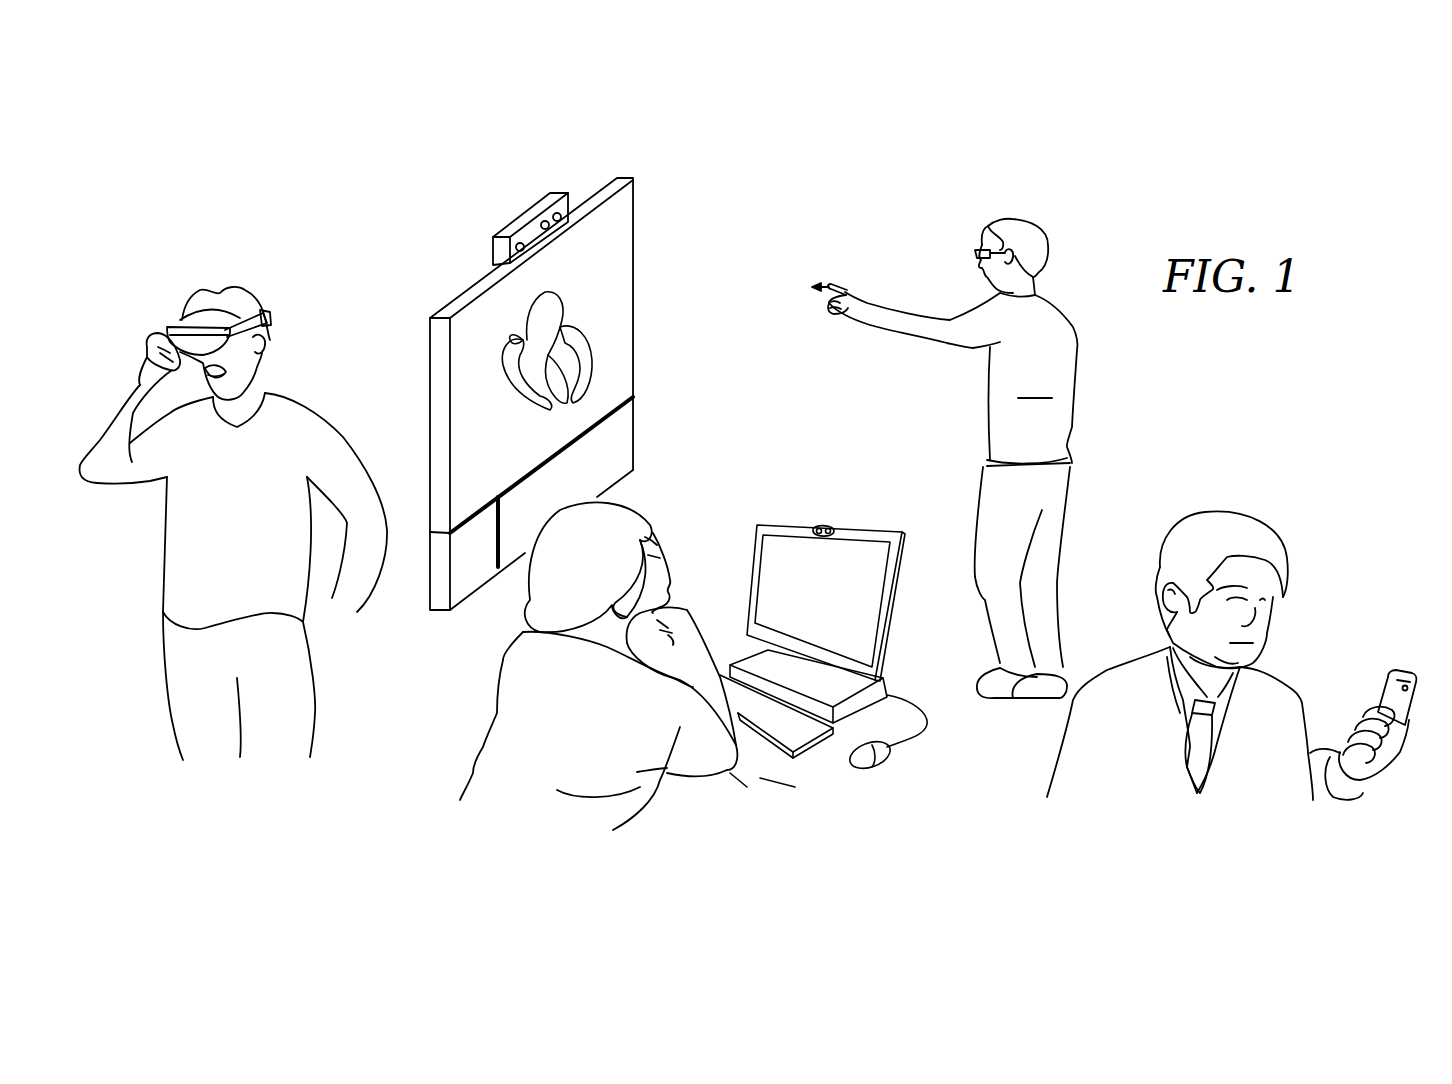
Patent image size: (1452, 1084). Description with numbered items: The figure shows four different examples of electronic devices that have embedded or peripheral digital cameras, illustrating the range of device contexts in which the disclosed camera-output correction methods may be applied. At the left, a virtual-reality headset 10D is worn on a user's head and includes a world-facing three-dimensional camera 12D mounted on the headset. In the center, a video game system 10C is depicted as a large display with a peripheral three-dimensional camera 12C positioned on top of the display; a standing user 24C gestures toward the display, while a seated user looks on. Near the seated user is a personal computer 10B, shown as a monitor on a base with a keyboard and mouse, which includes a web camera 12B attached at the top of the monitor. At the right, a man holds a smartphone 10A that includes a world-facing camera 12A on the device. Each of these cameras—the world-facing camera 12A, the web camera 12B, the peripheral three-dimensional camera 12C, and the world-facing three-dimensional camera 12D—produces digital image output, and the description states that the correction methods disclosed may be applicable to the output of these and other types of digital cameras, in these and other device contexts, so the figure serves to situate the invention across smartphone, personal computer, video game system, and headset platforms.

The smartphone 10A is at (1374, 694).
The world-facing camera 12A is at (1410, 690).
The personal computer 10B is at (898, 602).
The web camera 12B is at (822, 530).
The video game system 10C is at (715, 208).
The peripheral 3D camera 12C is at (492, 250).
The user performing gesture 24C is at (945, 458).
The virtual-reality headset 10D is at (270, 313).
The world-facing 3D camera 12D is at (183, 332).